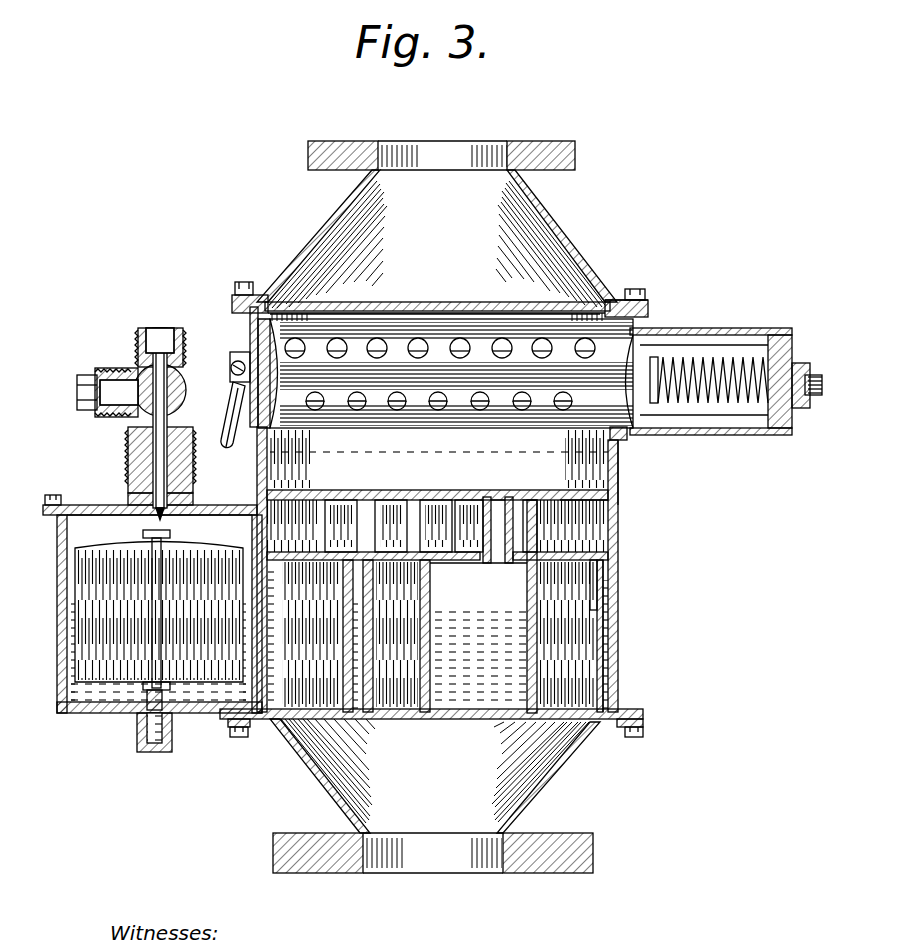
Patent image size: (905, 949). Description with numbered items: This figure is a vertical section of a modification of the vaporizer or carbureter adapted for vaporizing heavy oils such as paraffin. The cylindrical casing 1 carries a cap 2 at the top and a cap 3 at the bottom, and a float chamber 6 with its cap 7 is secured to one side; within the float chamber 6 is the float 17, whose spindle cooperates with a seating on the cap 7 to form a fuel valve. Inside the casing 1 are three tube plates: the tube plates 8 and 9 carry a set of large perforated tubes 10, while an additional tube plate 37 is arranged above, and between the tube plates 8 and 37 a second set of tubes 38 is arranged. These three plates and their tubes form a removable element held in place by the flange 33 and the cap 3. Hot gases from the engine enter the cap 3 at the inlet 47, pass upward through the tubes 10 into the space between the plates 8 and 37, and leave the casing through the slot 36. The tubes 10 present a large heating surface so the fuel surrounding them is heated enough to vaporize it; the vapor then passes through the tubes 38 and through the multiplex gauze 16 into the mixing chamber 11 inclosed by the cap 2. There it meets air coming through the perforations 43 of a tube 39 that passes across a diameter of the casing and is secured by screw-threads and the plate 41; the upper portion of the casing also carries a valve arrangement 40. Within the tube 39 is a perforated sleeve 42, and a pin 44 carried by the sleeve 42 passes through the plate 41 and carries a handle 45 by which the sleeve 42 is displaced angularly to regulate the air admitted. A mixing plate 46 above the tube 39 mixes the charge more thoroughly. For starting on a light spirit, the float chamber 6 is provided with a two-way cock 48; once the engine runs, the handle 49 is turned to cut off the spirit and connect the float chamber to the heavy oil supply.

The casing 1 is at (617, 486).
The cap 2 is at (548, 218).
The cap 3 is at (257, 509).
The float chamber 6 is at (62, 655).
The cap 7 is at (105, 505).
The tube plate 8 is at (605, 562).
The tube plate 9 is at (507, 722).
The tubes 10 is at (603, 622).
The mixing chamber 11 is at (507, 307).
The multiplex gauze 16 is at (617, 452).
The float 17 is at (118, 655).
The flange 33 is at (612, 494).
The slot 36 is at (431, 612).
The tube plate 37 is at (612, 505).
The tubes 38 is at (513, 545).
The tube 39 is at (683, 328).
The valve arrangement 40 is at (774, 347).
The plate 41 is at (275, 345).
The sleeve 42 is at (240, 352).
The perforations 43 is at (603, 305).
The lever arm 44 is at (237, 448).
The handle 45 is at (225, 440).
The mixing plate 46 is at (393, 305).
The inlet 47 is at (467, 852).
The two-way cock 48 is at (140, 372).
The handle 49 is at (88, 373).